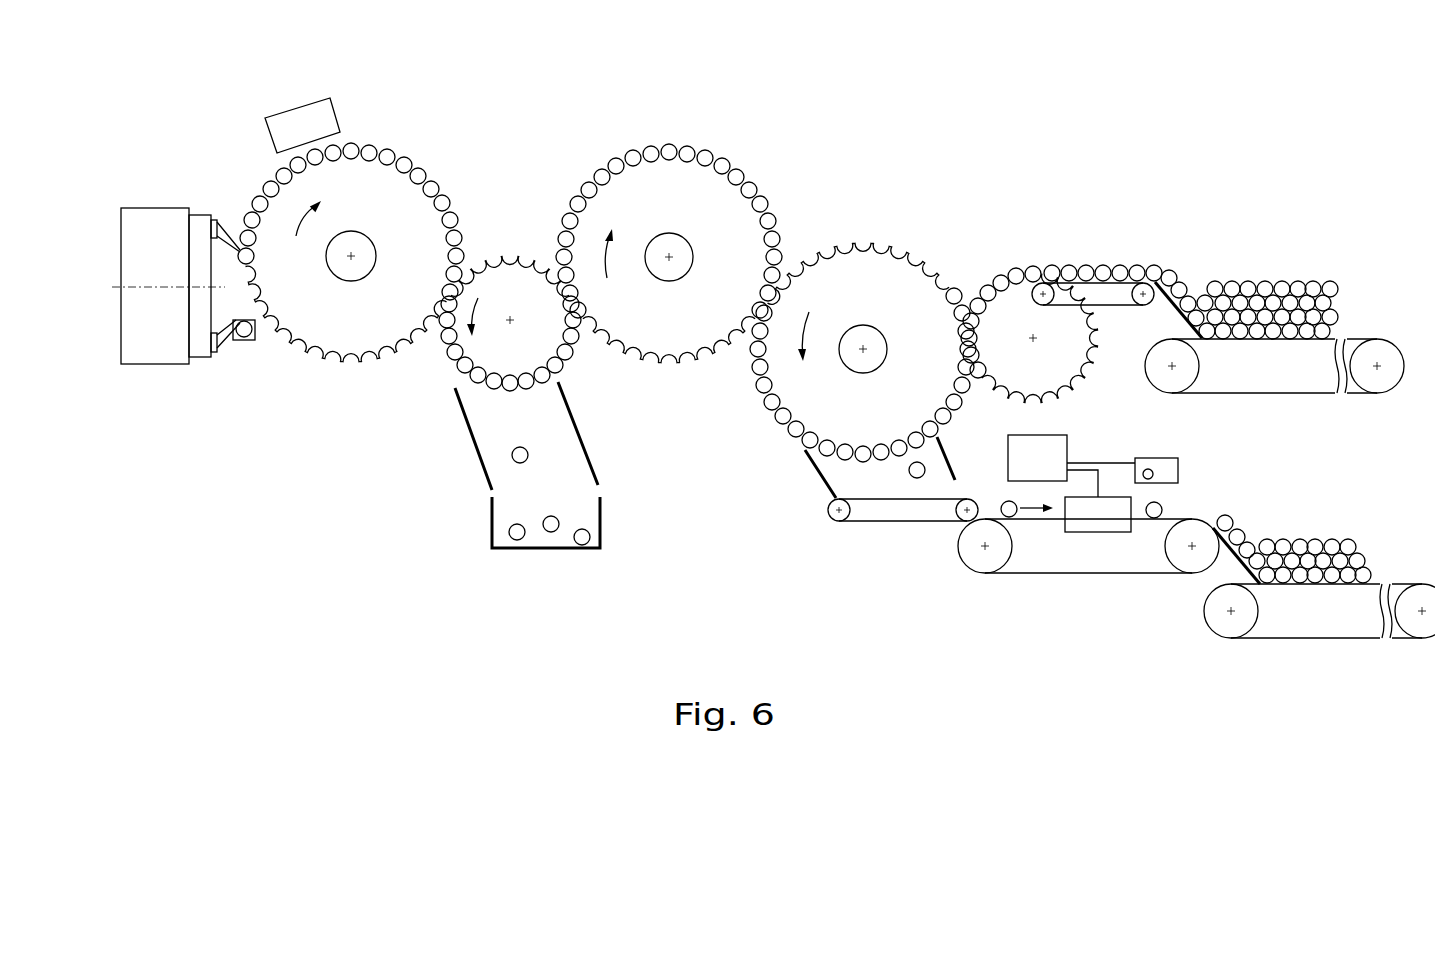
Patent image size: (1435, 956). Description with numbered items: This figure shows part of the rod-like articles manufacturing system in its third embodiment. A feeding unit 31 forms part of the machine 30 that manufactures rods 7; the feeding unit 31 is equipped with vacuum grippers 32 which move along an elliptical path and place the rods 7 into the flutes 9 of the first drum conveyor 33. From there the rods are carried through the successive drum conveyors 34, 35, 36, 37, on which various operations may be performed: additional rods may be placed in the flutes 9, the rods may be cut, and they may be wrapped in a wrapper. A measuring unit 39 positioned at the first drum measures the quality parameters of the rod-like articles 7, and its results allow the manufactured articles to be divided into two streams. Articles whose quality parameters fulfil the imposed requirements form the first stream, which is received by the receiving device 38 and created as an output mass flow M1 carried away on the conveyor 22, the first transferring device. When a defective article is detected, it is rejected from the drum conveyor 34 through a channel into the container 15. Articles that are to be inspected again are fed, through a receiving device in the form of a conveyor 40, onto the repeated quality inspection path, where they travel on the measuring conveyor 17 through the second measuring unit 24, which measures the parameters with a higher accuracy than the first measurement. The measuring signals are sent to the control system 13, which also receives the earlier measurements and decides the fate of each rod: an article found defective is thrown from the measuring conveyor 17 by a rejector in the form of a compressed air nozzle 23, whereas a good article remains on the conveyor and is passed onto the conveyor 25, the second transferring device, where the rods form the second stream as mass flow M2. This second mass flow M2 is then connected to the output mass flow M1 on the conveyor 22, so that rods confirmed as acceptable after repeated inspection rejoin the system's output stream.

The machine 30 is at (156, 184).
The feeding unit 31 is at (162, 320).
The vacuum grippers 32 is at (240, 248).
The drum conveyor 33 is at (372, 190).
The drum conveyor 34 is at (492, 296).
The drum conveyor 35 is at (672, 180).
The drum conveyor 36 is at (850, 278).
The drum conveyor 37 is at (1002, 322).
The receiving device 38 is at (1108, 240).
The measuring unit 39 is at (297, 130).
The rods 7 is at (246, 343).
The flutes 9 is at (352, 362).
The container 15 is at (600, 515).
The conveyor 40 is at (860, 522).
The measuring conveyor 17 is at (1022, 575).
The control system 13 is at (1055, 471).
The compressed air nozzle 23 is at (1177, 458).
The second measuring unit 24 is at (1090, 533).
The conveyor 22 is at (1257, 394).
The conveyor 25 is at (1400, 583).
The mass flow M1 is at (1432, 278).
The mass flow M2 is at (1315, 519).